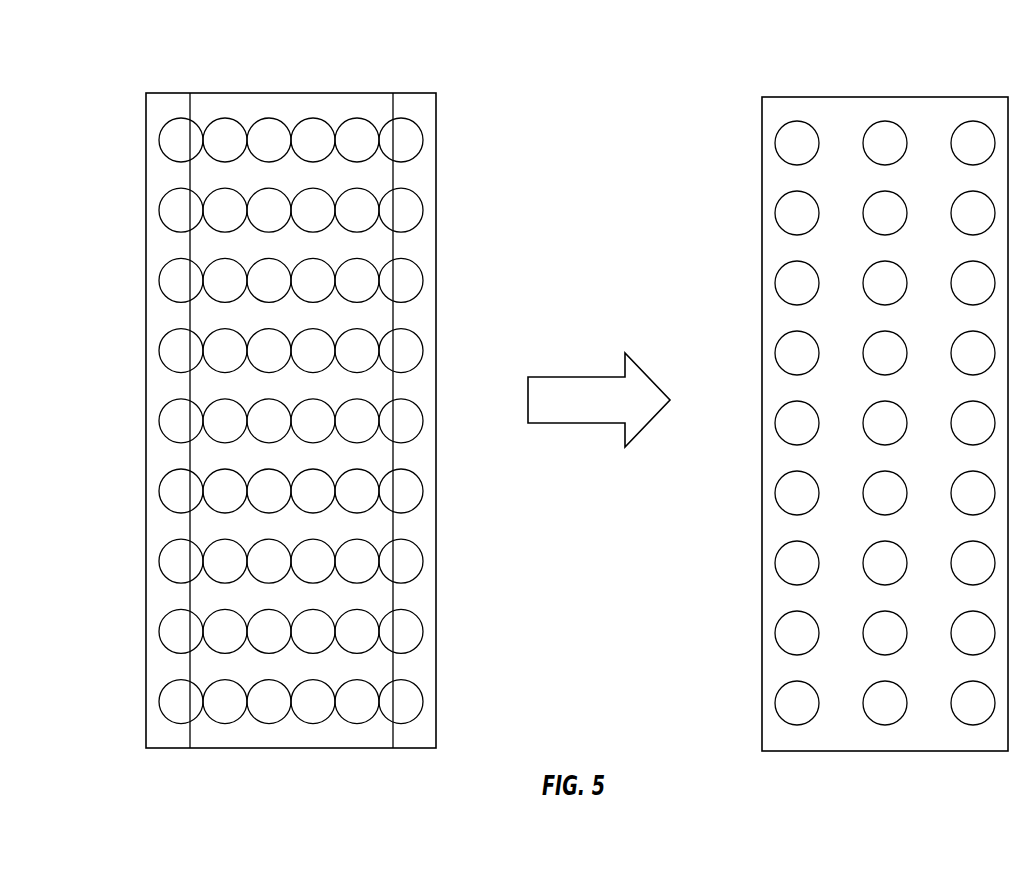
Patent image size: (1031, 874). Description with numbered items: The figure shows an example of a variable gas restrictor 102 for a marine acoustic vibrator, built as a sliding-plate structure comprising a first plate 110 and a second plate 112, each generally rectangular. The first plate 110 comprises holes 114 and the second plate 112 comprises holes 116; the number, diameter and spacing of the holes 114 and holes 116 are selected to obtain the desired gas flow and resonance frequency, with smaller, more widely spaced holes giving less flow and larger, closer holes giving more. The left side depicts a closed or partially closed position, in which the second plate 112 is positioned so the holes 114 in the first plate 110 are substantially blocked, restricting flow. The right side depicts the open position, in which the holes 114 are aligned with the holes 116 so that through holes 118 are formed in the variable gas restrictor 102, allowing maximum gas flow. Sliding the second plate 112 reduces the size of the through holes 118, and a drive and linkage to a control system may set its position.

The variable gas restrictor 102 is at (569, 394).
The first plate 110 is at (437, 112).
The second plate 112 is at (258, 93).
The holes 114 is at (416, 146).
The holes 116 is at (358, 130).
The through holes 118 is at (788, 148).